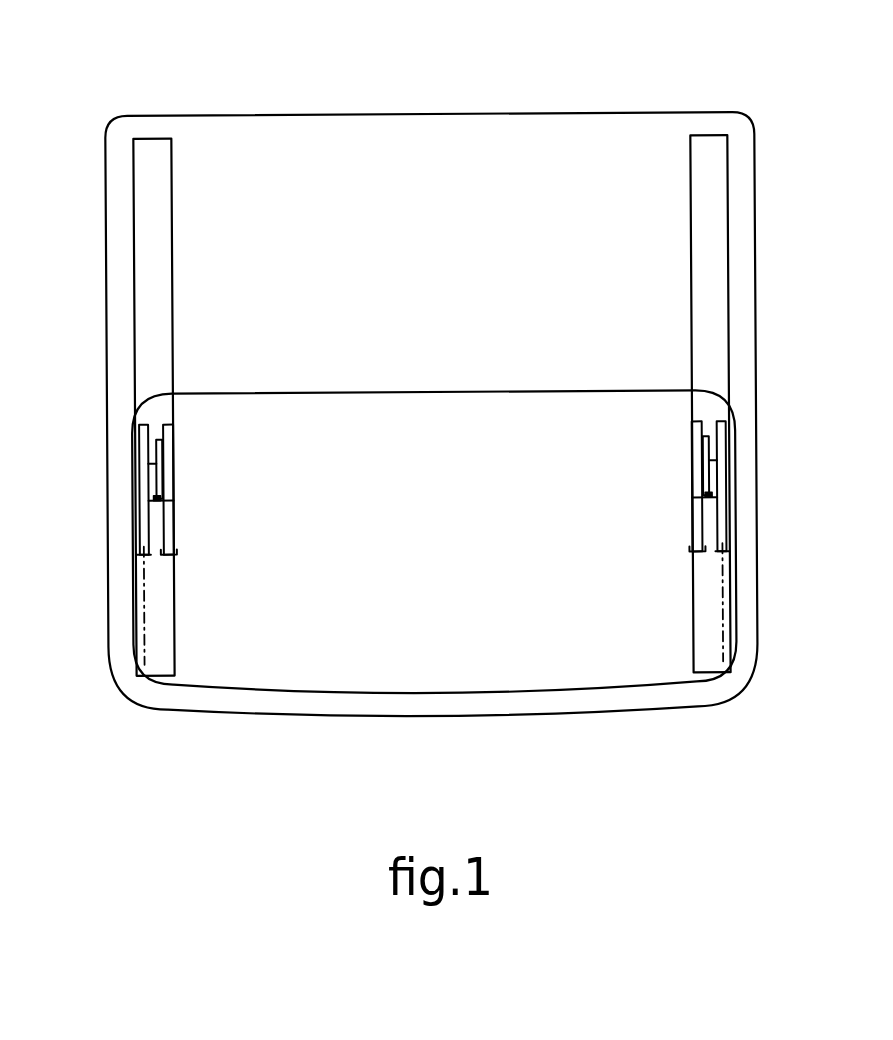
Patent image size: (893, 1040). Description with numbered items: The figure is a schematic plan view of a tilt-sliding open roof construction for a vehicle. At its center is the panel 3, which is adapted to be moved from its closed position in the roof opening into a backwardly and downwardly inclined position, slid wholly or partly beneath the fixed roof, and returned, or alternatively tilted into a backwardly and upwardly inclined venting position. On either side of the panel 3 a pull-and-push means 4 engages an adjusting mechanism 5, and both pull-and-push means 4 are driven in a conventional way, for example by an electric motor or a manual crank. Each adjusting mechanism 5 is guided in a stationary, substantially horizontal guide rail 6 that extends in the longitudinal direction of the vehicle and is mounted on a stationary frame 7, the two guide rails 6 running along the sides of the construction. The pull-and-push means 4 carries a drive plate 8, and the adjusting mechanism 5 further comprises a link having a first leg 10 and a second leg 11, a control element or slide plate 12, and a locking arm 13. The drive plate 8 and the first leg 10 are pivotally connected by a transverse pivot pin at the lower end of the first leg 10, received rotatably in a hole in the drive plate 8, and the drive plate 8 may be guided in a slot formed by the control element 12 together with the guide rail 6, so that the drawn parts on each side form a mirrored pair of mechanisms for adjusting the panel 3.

The panel 3 is at (435, 670).
The pull-and-push means 4 is at (142, 580).
The adjusting mechanism 5 is at (432, 488).
The guide rail 6 is at (154, 250).
The stationary frame 7 is at (413, 147).
The drive plate 8 is at (142, 472).
The first leg 10 is at (158, 480).
The second leg 11 is at (150, 495).
The control element 12 is at (170, 533).
The locking arm 13 is at (160, 499).